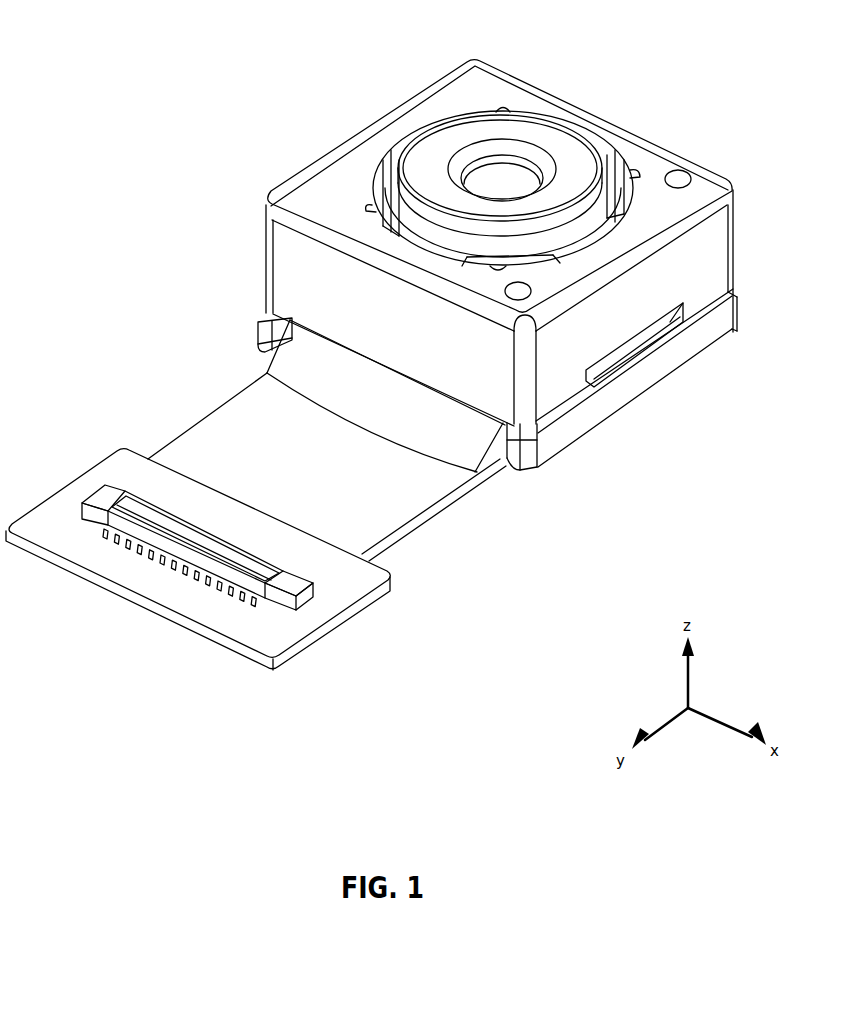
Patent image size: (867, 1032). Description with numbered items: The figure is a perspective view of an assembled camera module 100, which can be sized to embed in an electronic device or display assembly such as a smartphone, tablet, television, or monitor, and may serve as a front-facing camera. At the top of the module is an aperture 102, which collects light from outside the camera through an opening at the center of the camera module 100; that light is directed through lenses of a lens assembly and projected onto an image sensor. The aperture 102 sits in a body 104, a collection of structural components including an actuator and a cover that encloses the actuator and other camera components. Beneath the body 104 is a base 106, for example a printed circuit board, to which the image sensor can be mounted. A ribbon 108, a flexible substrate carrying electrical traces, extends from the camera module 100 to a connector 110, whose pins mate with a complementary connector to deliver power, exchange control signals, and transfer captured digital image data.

The camera module 100 is at (371, 343).
The aperture 102 is at (503, 158).
The body 104 is at (470, 265).
The base 106 is at (637, 379).
The ribbon 108 is at (327, 440).
The connector 110 is at (206, 559).